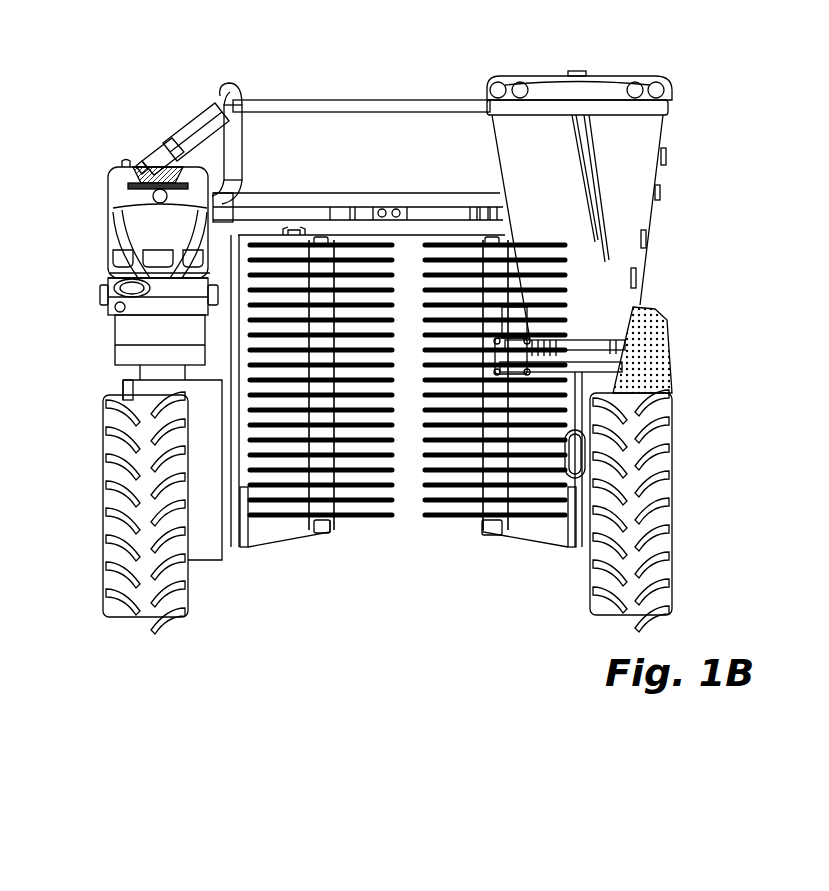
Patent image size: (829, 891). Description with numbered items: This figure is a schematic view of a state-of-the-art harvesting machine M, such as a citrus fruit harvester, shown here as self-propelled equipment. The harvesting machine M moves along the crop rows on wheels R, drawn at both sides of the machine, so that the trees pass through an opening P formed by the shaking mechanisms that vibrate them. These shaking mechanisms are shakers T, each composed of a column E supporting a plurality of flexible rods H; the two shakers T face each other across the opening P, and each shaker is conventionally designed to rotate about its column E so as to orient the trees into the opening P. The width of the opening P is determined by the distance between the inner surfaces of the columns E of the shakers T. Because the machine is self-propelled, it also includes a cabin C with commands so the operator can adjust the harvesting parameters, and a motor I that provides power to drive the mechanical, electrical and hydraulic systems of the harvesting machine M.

The harvesting machine M is at (415, 82).
The motor I is at (137, 175).
The cabin C is at (622, 179).
The wheels R is at (106, 478).
The flexible rods H is at (309, 503).
The shakers T is at (352, 580).
The column E is at (320, 534).
The opening P is at (397, 572).